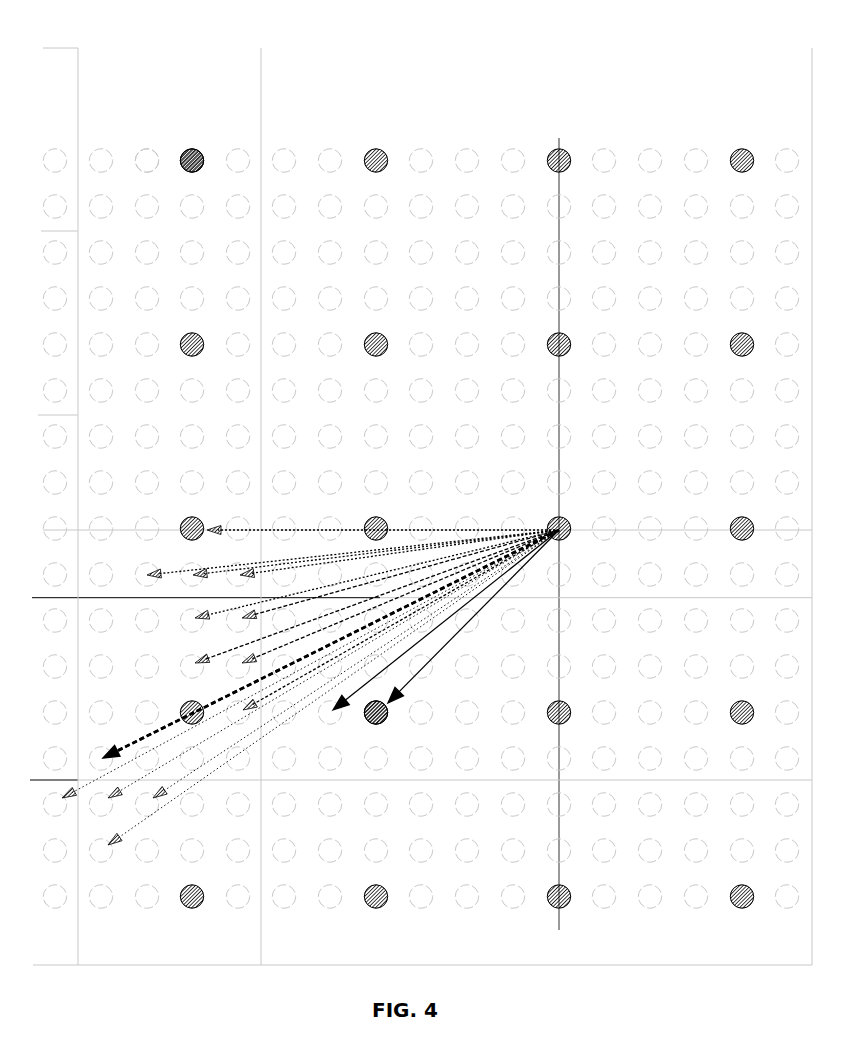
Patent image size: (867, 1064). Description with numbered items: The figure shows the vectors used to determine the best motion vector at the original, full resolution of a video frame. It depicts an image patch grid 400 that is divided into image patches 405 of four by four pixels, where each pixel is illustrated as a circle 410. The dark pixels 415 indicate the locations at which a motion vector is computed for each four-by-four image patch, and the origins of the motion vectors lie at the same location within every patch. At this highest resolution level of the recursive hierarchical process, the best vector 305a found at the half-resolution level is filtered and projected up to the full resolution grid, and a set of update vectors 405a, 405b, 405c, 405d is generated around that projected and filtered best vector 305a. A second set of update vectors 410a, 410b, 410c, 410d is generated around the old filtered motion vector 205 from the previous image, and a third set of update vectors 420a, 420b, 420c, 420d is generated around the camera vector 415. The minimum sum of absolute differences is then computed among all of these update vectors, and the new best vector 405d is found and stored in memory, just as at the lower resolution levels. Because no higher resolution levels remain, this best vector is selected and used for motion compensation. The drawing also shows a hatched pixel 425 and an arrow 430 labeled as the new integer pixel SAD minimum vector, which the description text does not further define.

The image patch grid 400 is at (92, 108).
The image patch 405 is at (118, 324).
The pixel 410 is at (147, 149).
The dark pixel / camera vector 415 is at (193, 151).
The new integer pixel SAD minimum position 425 is at (365, 718).
The new integer pixel SAD minimum vector 430 is at (405, 688).
The update vector 420a is at (267, 575).
The update vector 420b is at (212, 620).
The update vector 420c is at (212, 572).
The update vector 420d is at (263, 528).
The update vector 410a is at (288, 664).
The update vector 410b is at (348, 698).
The update vector 410c is at (213, 662).
The update vector 410d is at (277, 612).
The update vector 405a is at (170, 787).
The update vector 405b is at (222, 767).
The update vector 405c is at (100, 780).
The new best vector 405d is at (145, 736).
The best vector 305a is at (127, 787).
The old motion vector 205 is at (250, 682).